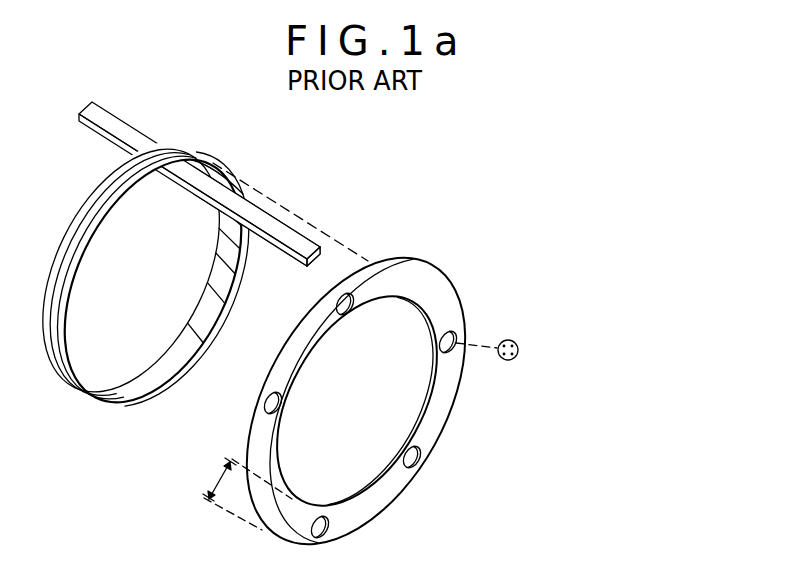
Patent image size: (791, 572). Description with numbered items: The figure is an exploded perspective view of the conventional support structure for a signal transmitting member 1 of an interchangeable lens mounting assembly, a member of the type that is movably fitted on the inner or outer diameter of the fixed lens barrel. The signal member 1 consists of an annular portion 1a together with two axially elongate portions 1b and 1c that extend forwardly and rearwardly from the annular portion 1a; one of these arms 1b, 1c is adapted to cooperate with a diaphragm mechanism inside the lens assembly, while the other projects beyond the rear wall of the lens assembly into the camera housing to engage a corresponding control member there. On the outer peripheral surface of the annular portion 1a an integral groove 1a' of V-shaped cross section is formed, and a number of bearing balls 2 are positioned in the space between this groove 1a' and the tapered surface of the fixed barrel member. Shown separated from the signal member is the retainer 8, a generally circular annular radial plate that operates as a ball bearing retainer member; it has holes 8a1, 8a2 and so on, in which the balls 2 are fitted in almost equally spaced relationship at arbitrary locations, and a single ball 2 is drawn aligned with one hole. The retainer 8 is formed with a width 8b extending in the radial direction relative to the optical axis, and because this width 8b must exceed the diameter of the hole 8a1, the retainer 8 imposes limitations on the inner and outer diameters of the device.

The signal transmitting member 1 is at (144, 277).
The annular portion 1a is at (145, 275).
The groove 1a' is at (131, 282).
The axially elongate portion 1b is at (126, 134).
The axially elongate portion 1c is at (276, 238).
The bearing ball 2 is at (506, 361).
The retainer 8 is at (353, 396).
The hole 8a1 is at (441, 348).
The hole 8a2 is at (345, 315).
The width 8b is at (244, 494).